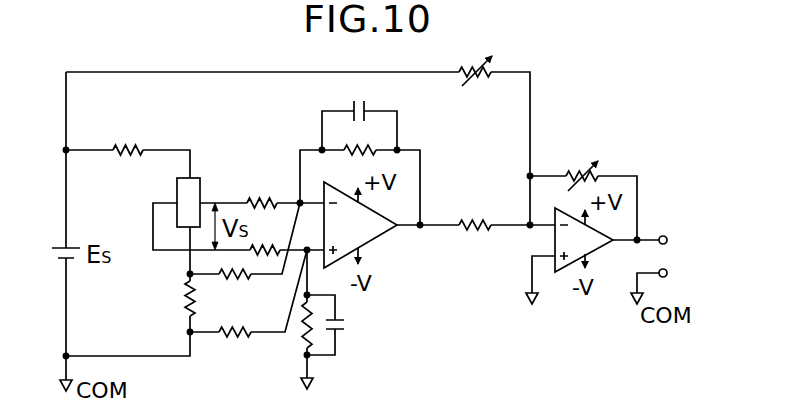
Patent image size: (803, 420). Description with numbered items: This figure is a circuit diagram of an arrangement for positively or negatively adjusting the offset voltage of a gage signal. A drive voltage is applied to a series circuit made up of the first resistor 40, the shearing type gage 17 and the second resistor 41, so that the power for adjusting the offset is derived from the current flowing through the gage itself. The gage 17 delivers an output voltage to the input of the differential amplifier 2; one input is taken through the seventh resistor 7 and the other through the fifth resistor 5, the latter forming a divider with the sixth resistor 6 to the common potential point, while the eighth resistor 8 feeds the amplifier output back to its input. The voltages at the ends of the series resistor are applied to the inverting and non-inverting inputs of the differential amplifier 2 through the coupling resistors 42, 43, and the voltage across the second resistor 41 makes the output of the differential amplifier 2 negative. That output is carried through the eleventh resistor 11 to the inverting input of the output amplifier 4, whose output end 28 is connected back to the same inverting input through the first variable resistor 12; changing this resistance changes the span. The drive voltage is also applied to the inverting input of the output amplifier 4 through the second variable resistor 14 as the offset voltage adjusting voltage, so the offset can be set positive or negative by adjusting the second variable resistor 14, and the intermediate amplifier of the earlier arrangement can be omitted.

The shearing type gage 17 is at (192, 178).
The output end of amplifier Q4 28 is at (667, 240).
The resistor R40 40 is at (134, 138).
The resistor R41 41 is at (173, 298).
The resistor R42 42 is at (238, 287).
The resistor R43 43 is at (238, 345).
The resistor R5 5 is at (264, 238).
The resistor R7 7 is at (261, 190).
The resistor R8 8 is at (360, 138).
The resistor R6 6 is at (297, 332).
The resistor R11 11 is at (479, 210).
The variable resistor R12 12 is at (582, 166).
The variable resistor R14 14 is at (481, 82).
The amplifier Q2 2 is at (373, 243).
The amplifier Q4 4 is at (572, 264).